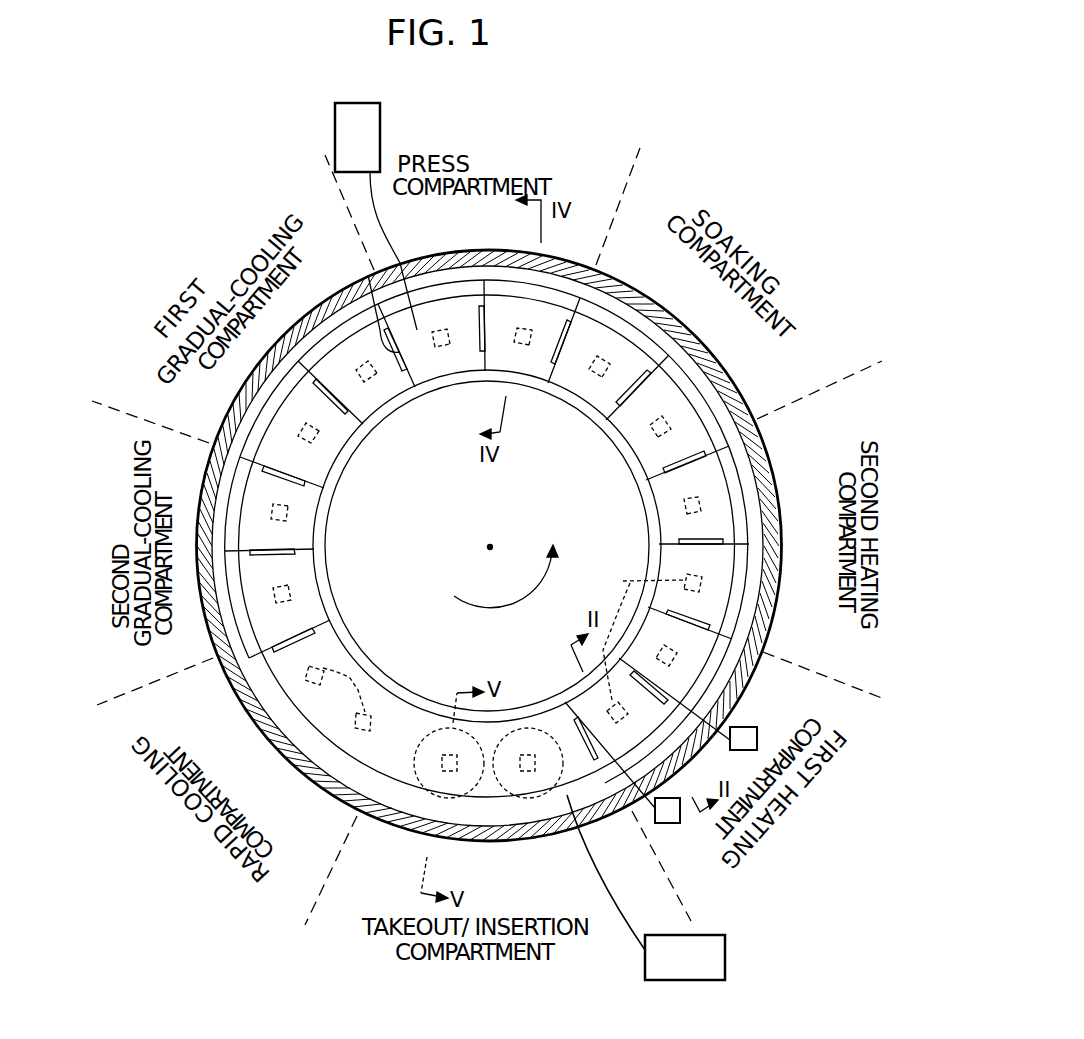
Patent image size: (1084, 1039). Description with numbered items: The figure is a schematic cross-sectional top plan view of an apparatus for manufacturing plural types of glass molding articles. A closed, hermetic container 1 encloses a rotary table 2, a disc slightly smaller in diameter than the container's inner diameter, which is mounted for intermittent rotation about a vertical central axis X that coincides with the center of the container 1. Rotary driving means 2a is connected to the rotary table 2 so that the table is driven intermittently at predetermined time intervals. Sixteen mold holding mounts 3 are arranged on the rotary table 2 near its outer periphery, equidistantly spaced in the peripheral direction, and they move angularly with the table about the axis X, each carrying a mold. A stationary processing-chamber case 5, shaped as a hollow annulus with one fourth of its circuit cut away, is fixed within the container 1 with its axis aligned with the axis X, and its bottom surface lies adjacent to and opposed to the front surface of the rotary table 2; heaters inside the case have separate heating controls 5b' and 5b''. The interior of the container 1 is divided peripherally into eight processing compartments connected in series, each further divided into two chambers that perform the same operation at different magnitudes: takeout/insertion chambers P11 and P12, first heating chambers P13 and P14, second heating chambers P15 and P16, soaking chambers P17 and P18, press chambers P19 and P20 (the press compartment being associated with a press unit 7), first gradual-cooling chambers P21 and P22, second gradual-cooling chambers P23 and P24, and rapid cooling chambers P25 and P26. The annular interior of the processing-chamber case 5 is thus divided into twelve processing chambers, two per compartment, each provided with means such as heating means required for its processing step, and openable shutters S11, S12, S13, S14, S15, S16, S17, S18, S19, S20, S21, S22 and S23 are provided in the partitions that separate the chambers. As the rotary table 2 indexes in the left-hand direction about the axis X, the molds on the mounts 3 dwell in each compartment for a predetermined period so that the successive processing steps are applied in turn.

The closed container 1 is at (588, 818).
The rotary table 2 is at (353, 762).
The rotary driving means 2a is at (727, 962).
The mold holding mount 3 is at (504, 640).
The processing-chamber case 5 is at (730, 410).
The heating control 5b' is at (673, 826).
The heating control 5b'' is at (732, 752).
The press unit 7 is at (382, 140).
The vertical axis X is at (489, 547).
The openable shutter S11 is at (578, 718).
The openable shutter S12 is at (724, 724).
The openable shutter S13 is at (742, 634).
The openable shutter S14 is at (701, 531).
The openable shutter S15 is at (686, 466).
The openable shutter S16 is at (638, 375).
The openable shutter S17 is at (557, 330).
The openable shutter S18 is at (479, 328).
The openable shutter S19 is at (368, 277).
The openable shutter S20 is at (340, 420).
The openable shutter S21 is at (278, 485).
The openable shutter S22 is at (325, 555).
The openable shutter S23 is at (314, 642).
The takeout/insertion chamber P11 is at (449, 763).
The takeout/insertion chamber P12 is at (528, 763).
The first heating chamber P13 is at (587, 683).
The first heating chamber P14 is at (669, 645).
The second heating chamber P15 is at (692, 572).
The second heating chamber P16 is at (673, 497).
The soaking chamber P17 is at (647, 437).
The soaking chamber P18 is at (597, 393).
The press chamber P19 is at (530, 357).
The press chamber P20 is at (450, 360).
The first gradual-cooling chamber P21 is at (383, 383).
The first gradual-cooling chamber P22 is at (347, 447).
The second gradual-cooling chamber P23 is at (303, 513).
The second gradual-cooling chamber P24 is at (300, 590).
The rapid cooling chamber P25 is at (327, 690).
The rapid cooling chamber P26 is at (388, 717).